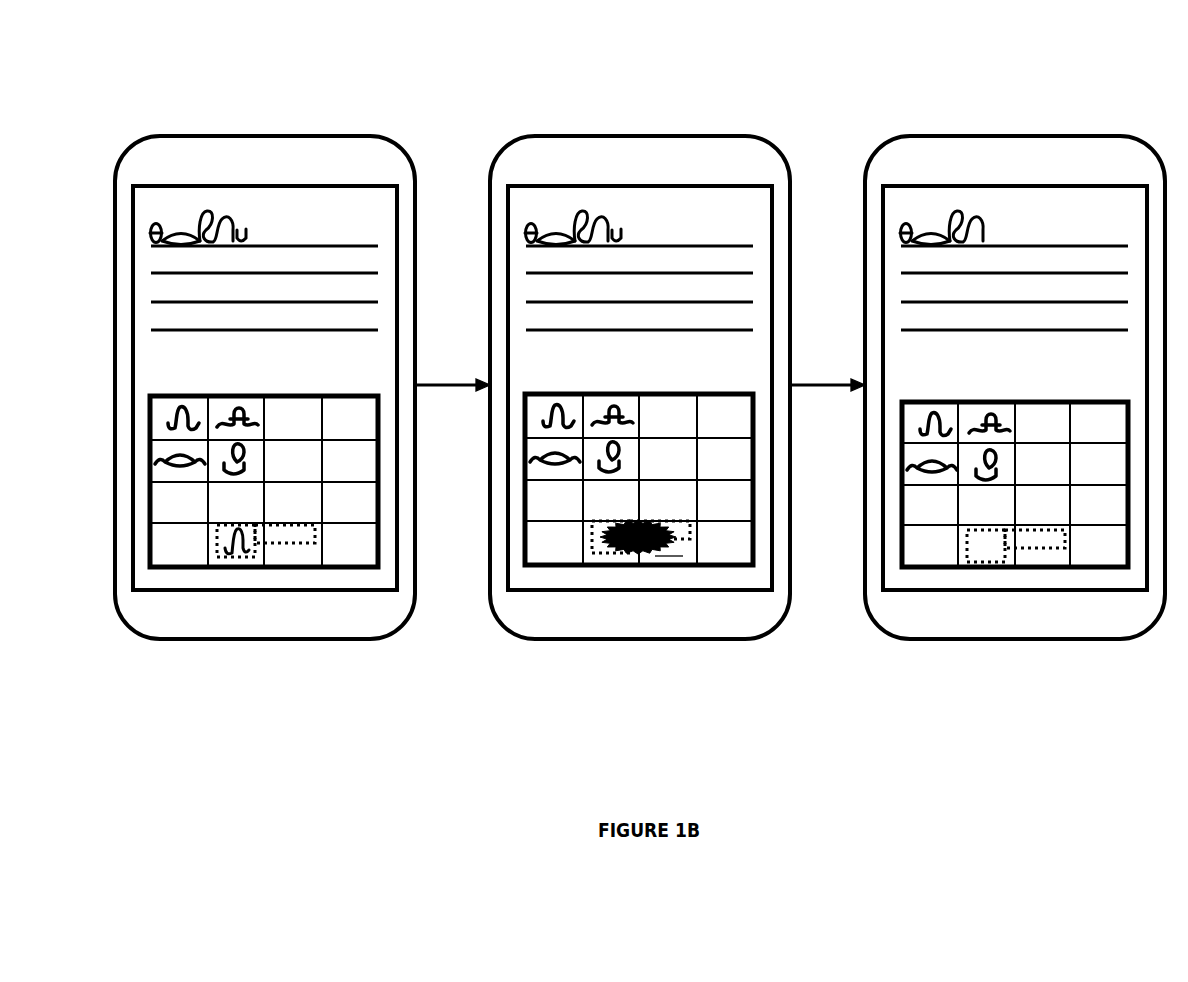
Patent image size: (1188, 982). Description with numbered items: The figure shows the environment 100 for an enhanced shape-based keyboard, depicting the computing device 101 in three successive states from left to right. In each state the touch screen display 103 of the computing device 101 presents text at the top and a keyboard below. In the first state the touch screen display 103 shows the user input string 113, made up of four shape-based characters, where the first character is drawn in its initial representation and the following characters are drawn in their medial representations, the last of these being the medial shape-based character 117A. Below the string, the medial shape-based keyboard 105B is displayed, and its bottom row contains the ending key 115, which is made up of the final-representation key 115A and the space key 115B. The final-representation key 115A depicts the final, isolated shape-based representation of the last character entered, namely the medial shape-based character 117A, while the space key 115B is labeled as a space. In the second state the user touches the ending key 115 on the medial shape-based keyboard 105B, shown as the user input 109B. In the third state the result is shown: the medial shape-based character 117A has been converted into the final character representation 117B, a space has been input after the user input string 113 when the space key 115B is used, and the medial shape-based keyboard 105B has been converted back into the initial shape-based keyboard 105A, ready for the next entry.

The environment 100 is at (110, 123).
The computing device 101 is at (168, 180).
The touch screen display 103 is at (171, 208).
The user input string 113 is at (148, 228).
The medial shape-based character 117A is at (233, 217).
The final character representation 117B is at (985, 218).
The medial shape-based keyboard 105B is at (375, 385).
The initial shape-based keyboard 105A is at (1125, 388).
The ending key 115 is at (308, 555).
The final-representation key 115A is at (238, 558).
The space key 115B is at (318, 533).
The user input 109B is at (642, 560).